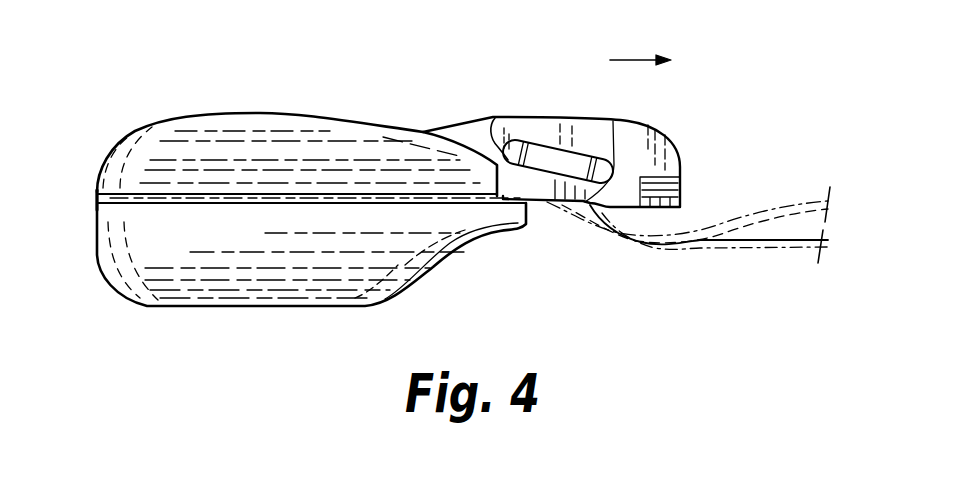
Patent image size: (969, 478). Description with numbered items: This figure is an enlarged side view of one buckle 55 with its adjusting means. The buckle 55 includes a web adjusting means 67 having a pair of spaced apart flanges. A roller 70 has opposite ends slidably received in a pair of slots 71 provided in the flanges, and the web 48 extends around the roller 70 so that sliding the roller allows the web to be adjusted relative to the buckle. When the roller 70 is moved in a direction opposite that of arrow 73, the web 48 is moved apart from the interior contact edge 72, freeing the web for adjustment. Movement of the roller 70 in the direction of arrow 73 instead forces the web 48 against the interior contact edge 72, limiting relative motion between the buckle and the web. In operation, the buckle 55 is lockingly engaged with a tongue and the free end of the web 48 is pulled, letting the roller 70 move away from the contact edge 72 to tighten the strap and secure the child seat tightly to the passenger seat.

The web 48 is at (745, 244).
The buckle 55 is at (190, 336).
The web adjusting means 67 is at (95, 199).
The roller 70 is at (545, 145).
The slots 71 is at (497, 119).
The interior contact edge 72 is at (610, 120).
The arrow 73 is at (631, 59).